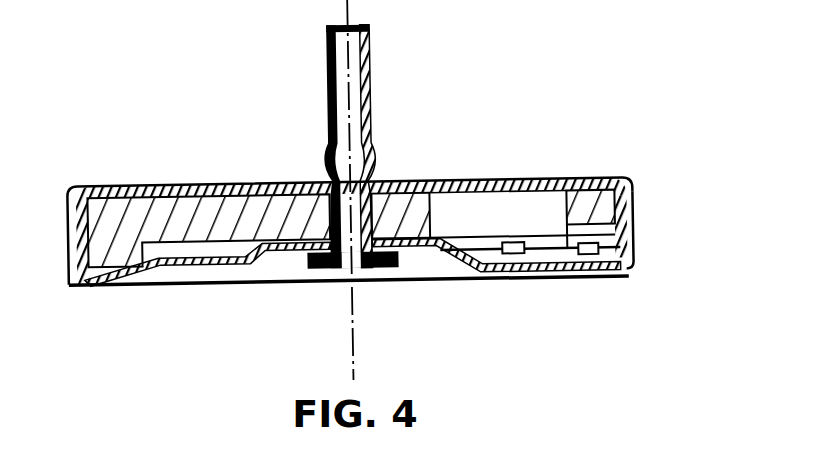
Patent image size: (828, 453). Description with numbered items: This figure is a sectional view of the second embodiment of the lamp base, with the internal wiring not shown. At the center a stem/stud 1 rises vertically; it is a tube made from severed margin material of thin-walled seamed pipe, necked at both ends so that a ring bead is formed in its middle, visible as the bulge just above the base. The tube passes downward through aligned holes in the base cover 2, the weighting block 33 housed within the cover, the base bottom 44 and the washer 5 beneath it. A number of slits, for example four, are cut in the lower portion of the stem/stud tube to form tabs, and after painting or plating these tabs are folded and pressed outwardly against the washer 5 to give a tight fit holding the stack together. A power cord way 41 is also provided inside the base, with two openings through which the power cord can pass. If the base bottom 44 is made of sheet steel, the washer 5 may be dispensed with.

The stem/stud 1 is at (373, 60).
The base cover 2 is at (512, 186).
The weighting block 33 is at (632, 205).
The power cord way 41 is at (622, 275).
The base bottom 44 is at (534, 278).
The washer 5 is at (397, 261).